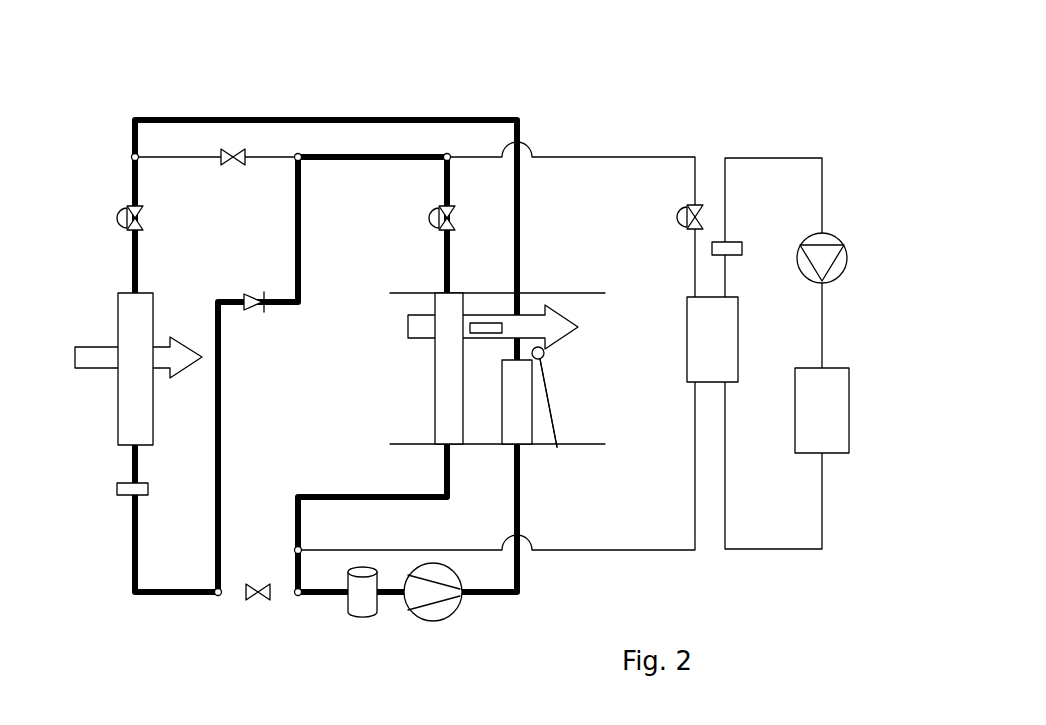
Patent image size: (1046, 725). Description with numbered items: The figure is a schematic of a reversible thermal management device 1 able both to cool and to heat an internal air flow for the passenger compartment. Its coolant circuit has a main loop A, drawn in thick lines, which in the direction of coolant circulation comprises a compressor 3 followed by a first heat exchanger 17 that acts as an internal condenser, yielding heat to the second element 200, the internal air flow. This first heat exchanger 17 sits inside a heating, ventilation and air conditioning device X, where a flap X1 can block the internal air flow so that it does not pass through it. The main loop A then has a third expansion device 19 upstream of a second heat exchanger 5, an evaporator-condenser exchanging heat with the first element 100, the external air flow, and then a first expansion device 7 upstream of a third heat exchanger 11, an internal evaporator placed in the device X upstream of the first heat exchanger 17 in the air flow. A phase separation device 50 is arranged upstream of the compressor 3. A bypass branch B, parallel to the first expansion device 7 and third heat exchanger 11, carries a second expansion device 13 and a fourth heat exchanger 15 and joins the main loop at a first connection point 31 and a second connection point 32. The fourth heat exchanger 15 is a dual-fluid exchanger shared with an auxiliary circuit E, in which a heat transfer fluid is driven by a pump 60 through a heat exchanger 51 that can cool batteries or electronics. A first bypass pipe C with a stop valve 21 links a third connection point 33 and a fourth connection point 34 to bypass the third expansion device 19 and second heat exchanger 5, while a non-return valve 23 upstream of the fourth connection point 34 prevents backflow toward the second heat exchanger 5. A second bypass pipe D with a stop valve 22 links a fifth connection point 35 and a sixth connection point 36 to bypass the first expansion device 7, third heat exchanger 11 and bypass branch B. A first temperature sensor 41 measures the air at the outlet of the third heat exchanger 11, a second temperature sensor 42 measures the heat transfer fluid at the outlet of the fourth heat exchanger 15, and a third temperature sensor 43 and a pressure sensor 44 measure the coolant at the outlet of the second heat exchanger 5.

The thermal management device 1 is at (118, 55).
The compressor 3 is at (433, 621).
The second heat exchanger 5 is at (135, 369).
The first expansion device 7 is at (430, 216).
The third heat exchanger 11 is at (449, 368).
The second expansion device 13 is at (678, 215).
The fourth heat exchanger 15 is at (712, 339).
The first heat exchanger 17 is at (517, 402).
The third expansion device 19 is at (118, 216).
The stop valve 21 is at (233, 150).
The stop valve 22 is at (258, 598).
The non-return valve 23 is at (255, 306).
The first connection point 31 is at (450, 152).
The second connection point 32 is at (296, 546).
The third connection point 33 is at (131, 157).
The fourth connection point 34 is at (298, 152).
The fifth connection point 35 is at (215, 596).
The sixth connection point 36 is at (300, 597).
The first temperature sensor 41 is at (486, 323).
The second temperature sensor 42 is at (740, 245).
The third temperature sensor 43 is at (98, 521).
The pressure sensor 44 is at (118, 497).
The phase separation device 50 is at (362, 617).
The battery / heat source 51 is at (822, 410).
The pump 60 is at (846, 262).
The first element 100 is at (95, 347).
The second element 200 is at (410, 338).
The main loop A is at (336, 104).
The bypass branch B is at (612, 138).
The first bypass pipe C is at (170, 138).
The second bypass pipe D is at (226, 615).
The auxiliary circuit E is at (765, 572).
The heating, ventilation and air conditioning device X is at (562, 452).
The flap X1 is at (545, 352).